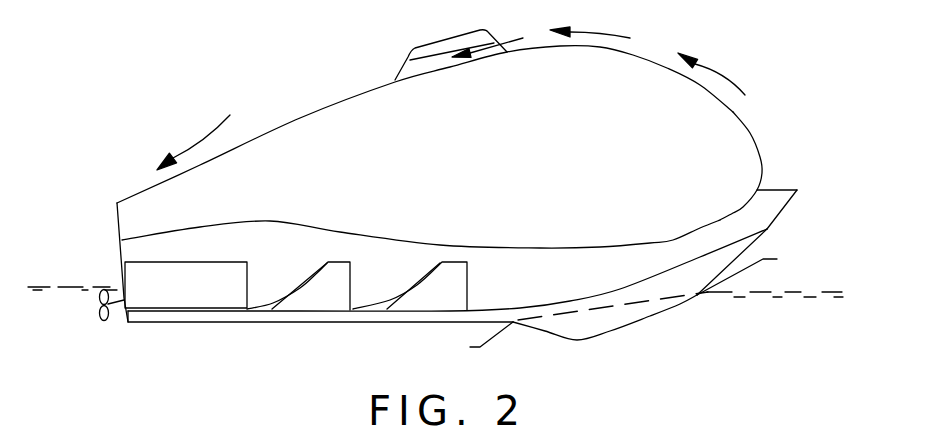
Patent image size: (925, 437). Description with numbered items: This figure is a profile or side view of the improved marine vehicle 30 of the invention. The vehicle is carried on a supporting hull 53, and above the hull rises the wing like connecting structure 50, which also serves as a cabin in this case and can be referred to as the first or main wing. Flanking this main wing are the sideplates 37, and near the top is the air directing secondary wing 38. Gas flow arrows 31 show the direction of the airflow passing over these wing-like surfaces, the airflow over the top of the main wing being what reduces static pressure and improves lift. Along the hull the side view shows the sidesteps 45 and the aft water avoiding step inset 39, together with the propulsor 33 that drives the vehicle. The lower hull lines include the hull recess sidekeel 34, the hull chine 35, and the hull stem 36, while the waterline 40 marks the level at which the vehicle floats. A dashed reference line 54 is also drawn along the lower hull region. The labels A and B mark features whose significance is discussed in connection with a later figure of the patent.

The marine vehicle 30 is at (780, 190).
The gas flow arrows 31 is at (300, 100).
The propulsor 33 is at (98, 317).
The hull recess sidekeel 34 is at (328, 322).
The hull chine 35 is at (585, 300).
The hull stem 36 is at (772, 243).
The sideplates 37 is at (625, 175).
The air directing secondary wing 38 is at (413, 50).
The aft water avoiding step inset 39 is at (197, 296).
The waterline 40 is at (50, 285).
The sidesteps 45 is at (340, 303).
The wing like connecting structure 50 is at (750, 128).
The supporting hull 53 is at (787, 207).
The reference line 54 is at (640, 302).
The label A is at (746, 271).
The label B is at (481, 342).